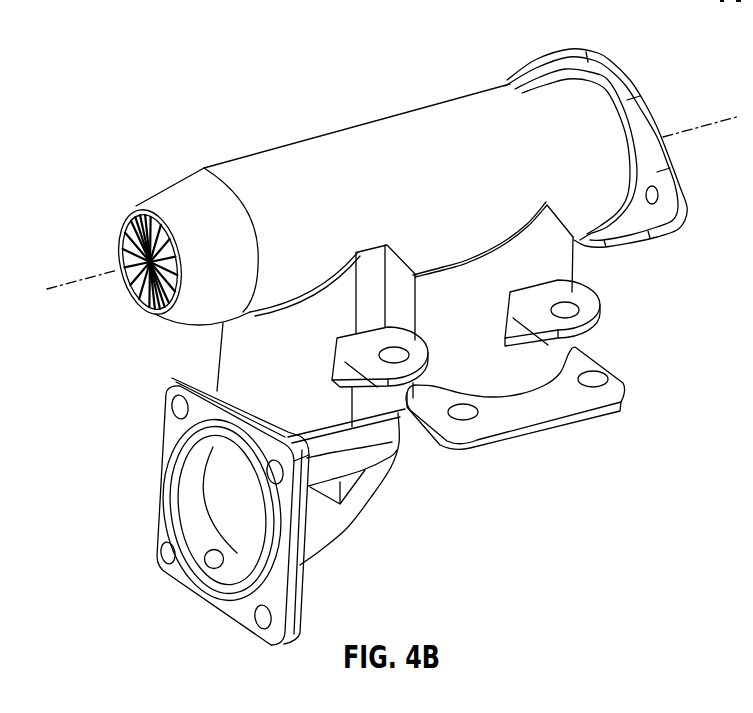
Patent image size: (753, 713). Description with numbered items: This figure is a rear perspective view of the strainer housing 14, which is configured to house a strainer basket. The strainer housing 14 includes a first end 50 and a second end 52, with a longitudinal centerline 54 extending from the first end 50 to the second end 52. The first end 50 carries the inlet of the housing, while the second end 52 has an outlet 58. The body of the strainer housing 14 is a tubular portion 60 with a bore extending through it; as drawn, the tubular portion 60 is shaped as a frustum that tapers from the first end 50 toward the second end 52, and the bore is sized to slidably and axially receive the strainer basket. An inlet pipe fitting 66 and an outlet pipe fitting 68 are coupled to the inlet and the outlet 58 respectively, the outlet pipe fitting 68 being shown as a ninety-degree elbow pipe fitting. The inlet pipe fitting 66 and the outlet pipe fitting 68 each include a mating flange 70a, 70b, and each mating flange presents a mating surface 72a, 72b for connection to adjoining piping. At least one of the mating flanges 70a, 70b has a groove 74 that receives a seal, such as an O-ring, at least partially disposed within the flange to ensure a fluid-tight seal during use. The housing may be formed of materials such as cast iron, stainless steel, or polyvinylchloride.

The strainer housing 14 is at (153, 104).
The first end 50 is at (633, 217).
The second end 52 is at (152, 191).
The longitudinal centerline 54 is at (80, 277).
The outlet 58 is at (214, 571).
The tubular portion 60 is at (353, 126).
The inlet pipe fitting 66 is at (387, 460).
The outlet pipe fitting 68 is at (570, 262).
The mating flange 70a is at (572, 404).
The mating flange 70b is at (295, 553).
The mating surface 72a is at (462, 447).
The mating surface 72b is at (180, 572).
The groove 74 is at (245, 582).